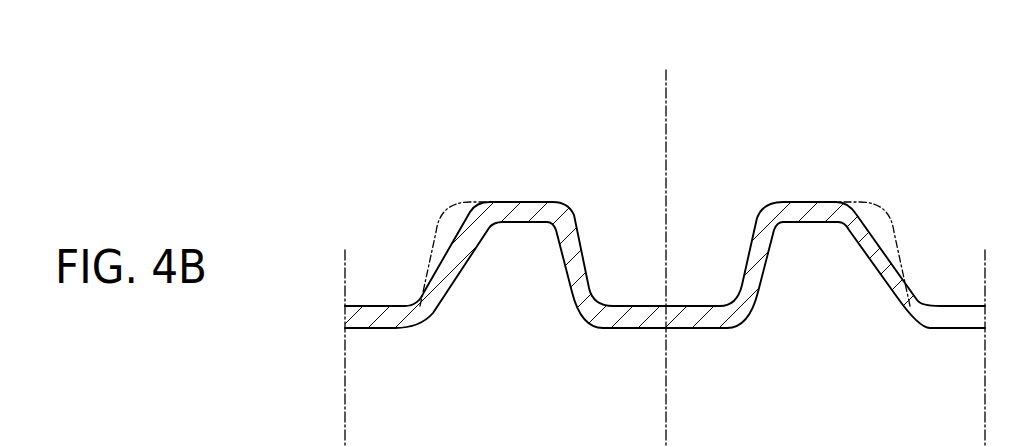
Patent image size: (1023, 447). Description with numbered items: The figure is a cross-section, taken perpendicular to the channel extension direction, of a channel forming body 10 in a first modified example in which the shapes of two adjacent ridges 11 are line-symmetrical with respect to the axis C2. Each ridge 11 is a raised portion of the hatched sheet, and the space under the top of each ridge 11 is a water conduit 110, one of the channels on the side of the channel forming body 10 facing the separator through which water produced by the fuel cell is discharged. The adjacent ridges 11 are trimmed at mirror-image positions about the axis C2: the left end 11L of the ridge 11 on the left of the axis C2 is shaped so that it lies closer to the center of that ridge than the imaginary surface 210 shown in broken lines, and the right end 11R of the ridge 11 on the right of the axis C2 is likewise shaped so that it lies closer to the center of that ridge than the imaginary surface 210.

The channel forming body 10 is at (487, 110).
The ridge 11 is at (647, 258).
The left end of the ridge 11L is at (455, 235).
The right end of the ridge 11R is at (577, 210).
The water conduit 110 is at (505, 250).
The imaginary surface 210 is at (440, 223).
The axis C2 is at (678, 241).